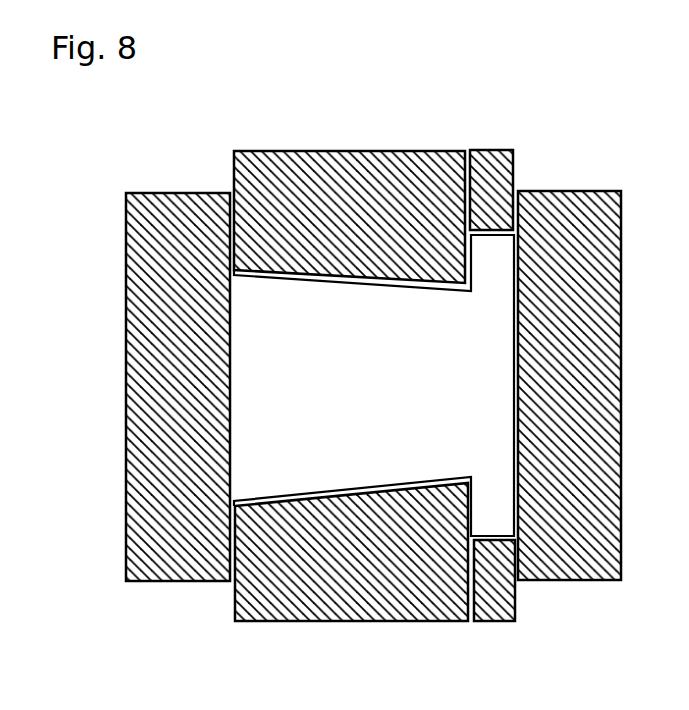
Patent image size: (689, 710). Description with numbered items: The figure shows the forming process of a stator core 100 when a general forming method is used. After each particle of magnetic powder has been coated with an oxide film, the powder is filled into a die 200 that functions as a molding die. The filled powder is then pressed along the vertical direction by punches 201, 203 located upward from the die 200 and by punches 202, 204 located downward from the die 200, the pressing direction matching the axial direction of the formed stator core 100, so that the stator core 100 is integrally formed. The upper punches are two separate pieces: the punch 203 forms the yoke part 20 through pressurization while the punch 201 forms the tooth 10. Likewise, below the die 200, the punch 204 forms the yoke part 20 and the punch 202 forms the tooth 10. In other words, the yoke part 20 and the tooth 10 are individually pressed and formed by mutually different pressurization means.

The stator core 100 is at (134, 157).
The die 200 is at (177, 537).
The punch 201 is at (346, 160).
The punch 202 is at (348, 592).
The punch 203 is at (479, 153).
The punch 204 is at (485, 600).
The tooth 10 is at (253, 315).
The yoke part 20 is at (488, 364).